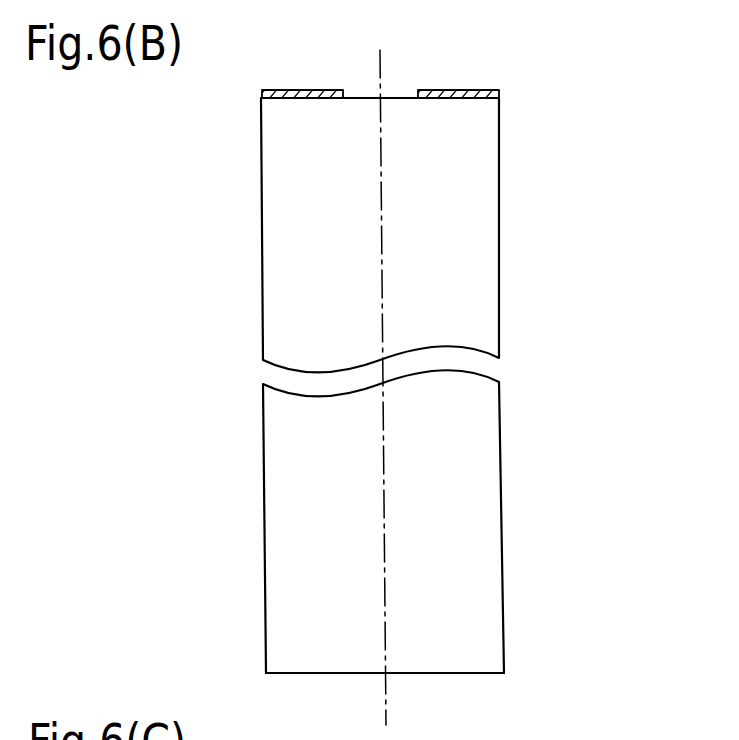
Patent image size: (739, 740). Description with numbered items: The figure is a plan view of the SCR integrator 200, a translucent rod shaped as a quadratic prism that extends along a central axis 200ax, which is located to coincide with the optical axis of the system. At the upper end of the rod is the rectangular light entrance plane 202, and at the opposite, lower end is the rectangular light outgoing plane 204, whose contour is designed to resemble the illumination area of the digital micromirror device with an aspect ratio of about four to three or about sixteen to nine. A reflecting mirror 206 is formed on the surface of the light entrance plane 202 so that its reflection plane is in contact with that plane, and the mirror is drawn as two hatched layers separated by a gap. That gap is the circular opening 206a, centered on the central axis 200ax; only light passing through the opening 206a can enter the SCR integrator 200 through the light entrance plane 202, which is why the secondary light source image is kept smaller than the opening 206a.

The SCR integrator 200 is at (558, 155).
The central axis 200ax is at (382, 272).
The light entrance plane 202 is at (362, 97).
The light outgoing plane 204 is at (458, 675).
The reflecting mirror 206 is at (499, 92).
The opening 206a is at (402, 92).